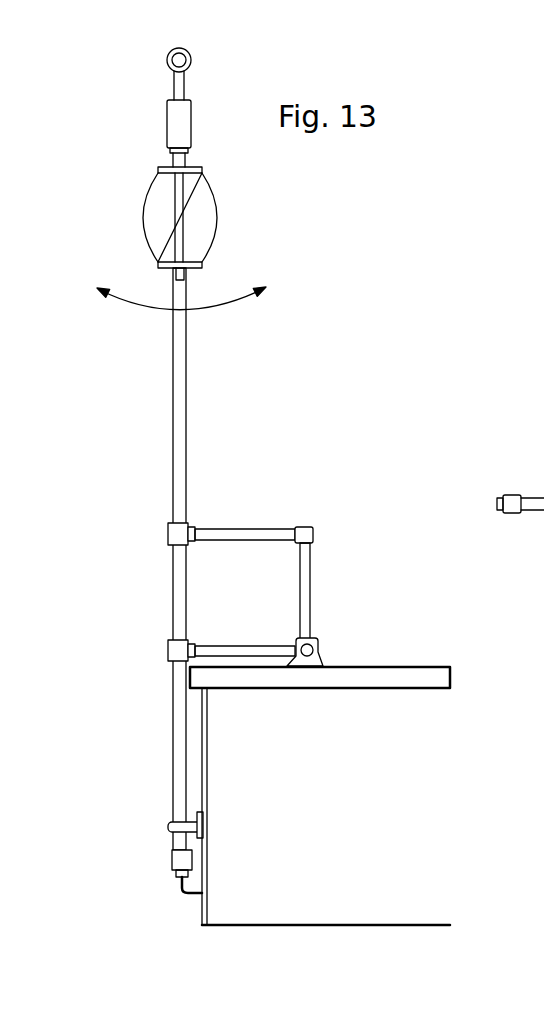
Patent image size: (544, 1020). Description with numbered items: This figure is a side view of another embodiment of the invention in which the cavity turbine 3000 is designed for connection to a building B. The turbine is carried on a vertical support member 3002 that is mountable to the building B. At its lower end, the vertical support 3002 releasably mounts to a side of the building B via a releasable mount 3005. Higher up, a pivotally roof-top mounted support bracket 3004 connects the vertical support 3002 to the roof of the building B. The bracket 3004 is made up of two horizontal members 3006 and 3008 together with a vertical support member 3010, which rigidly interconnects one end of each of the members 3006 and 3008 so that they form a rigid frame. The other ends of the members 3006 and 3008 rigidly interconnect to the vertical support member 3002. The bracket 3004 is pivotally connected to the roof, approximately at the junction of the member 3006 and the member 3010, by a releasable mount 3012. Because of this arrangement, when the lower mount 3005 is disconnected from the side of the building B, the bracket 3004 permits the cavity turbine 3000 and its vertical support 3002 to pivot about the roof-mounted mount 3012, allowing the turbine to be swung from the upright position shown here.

The cavity turbine 3000 is at (321, 366).
The vertical support member 3002 is at (188, 368).
The support bracket 3004 is at (300, 527).
The releasable mount 3005 is at (205, 812).
The horizontal member 3006 is at (240, 655).
The horizontal member 3008 is at (223, 528).
The vertical support member 3010 is at (323, 535).
The releasable mount 3012 is at (316, 648).
The building B is at (232, 688).